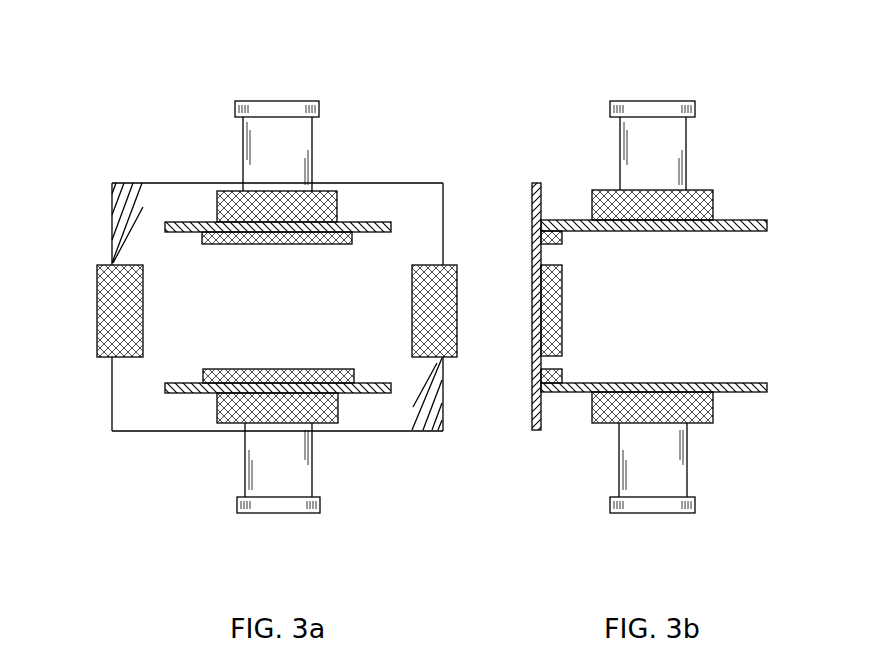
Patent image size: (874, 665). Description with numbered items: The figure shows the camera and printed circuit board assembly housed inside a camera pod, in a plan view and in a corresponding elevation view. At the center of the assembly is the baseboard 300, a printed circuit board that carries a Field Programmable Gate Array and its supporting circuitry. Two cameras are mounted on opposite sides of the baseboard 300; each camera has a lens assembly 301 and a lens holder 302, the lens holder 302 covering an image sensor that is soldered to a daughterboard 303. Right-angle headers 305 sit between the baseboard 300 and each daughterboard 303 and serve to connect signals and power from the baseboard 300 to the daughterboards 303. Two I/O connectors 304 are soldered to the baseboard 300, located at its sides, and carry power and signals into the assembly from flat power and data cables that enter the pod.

In FIG. 3a, the baseboard 300 is at (442, 183).
In FIG. 3b, the baseboard 300 is at (532, 183).
In FIG. 3a, the lens assembly 301 is at (313, 132).
In FIG. 3b, the lens assembly 301 is at (618, 132).
In FIG. 3a, the lens holder 302 is at (338, 423).
In FIG. 3b, the lens holder 302 is at (592, 393).
In FIG. 3a, the daughterboard 303 is at (391, 393).
In FIG. 3b, the daughterboard 303 is at (573, 393).
In FIG. 3a, the I/O connector 304 is at (97, 292).
In FIG. 3b, the I/O connector 304 is at (550, 262).
In FIG. 3a, the right-angle header 305 is at (310, 244).
In FIG. 3b, the right-angle header 305 is at (556, 245).